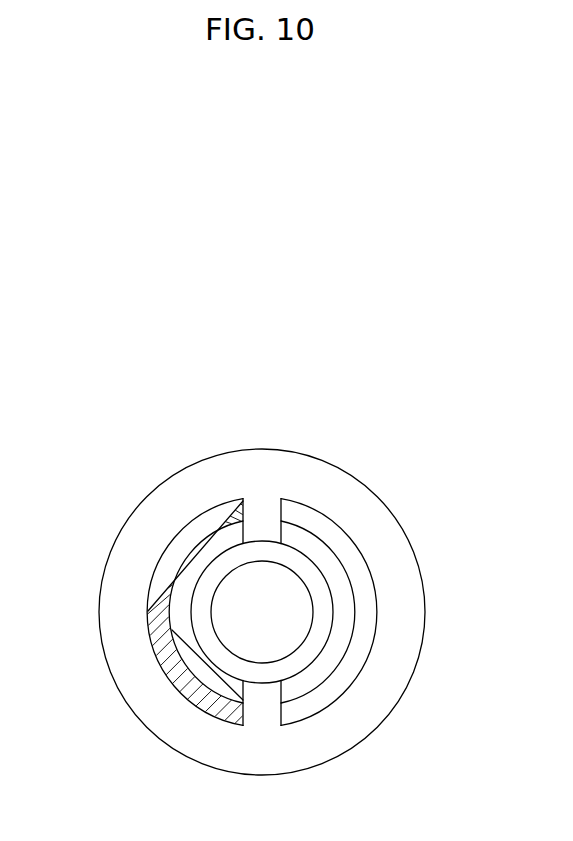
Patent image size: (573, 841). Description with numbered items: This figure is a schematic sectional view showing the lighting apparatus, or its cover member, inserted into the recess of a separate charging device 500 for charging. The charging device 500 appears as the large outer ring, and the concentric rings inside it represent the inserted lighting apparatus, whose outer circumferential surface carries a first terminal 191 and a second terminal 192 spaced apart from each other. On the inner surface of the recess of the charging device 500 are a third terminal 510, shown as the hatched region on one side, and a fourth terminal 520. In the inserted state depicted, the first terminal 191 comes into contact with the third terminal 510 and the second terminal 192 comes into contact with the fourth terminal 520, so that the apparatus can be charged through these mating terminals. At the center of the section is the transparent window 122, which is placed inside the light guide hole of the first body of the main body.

The charging device 500 is at (403, 540).
The transparent window 122 is at (283, 580).
The first terminal 191 is at (215, 678).
The second terminal 192 is at (365, 593).
The fourth terminal 520 is at (365, 638).
The third terminal 510 is at (151, 592).